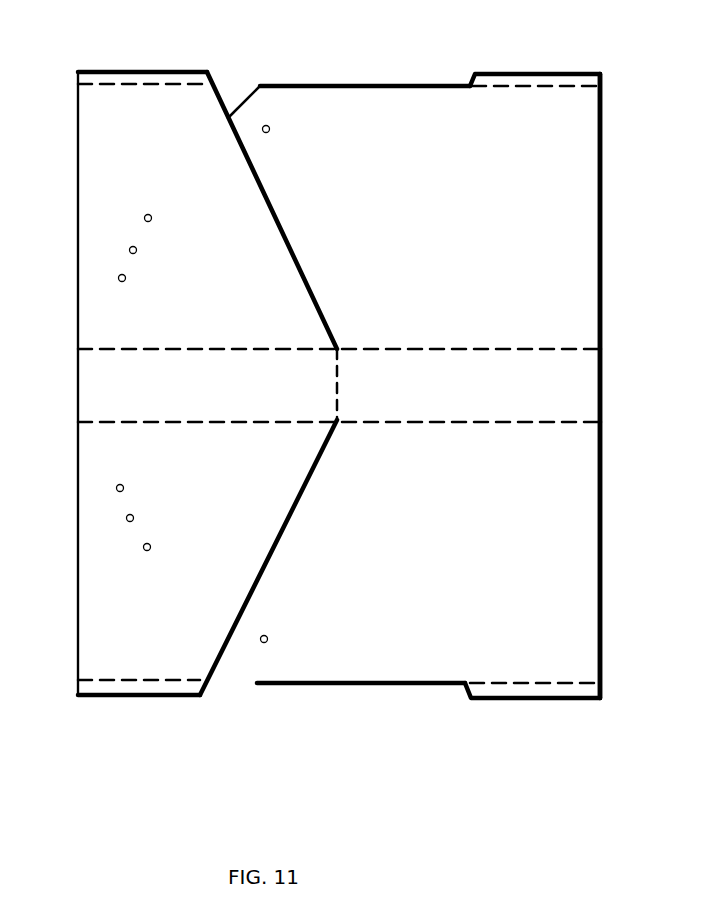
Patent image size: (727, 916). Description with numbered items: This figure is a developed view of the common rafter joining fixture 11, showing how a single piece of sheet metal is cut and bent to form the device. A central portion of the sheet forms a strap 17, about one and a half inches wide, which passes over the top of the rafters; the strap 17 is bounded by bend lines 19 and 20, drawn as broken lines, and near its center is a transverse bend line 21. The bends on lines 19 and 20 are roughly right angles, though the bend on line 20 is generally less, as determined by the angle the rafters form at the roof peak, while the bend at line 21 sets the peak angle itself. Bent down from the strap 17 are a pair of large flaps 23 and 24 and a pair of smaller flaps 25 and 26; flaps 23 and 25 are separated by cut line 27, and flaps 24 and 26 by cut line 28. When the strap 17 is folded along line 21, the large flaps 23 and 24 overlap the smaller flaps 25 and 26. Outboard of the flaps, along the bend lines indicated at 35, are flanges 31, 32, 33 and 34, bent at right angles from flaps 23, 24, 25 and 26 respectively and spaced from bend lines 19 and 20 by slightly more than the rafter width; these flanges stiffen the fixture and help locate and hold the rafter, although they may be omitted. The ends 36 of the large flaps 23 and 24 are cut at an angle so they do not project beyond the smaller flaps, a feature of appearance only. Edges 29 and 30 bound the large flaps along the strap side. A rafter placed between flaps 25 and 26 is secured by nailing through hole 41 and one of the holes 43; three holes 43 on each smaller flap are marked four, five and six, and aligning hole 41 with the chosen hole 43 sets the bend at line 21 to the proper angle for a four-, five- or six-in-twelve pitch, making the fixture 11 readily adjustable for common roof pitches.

The fixture 11 is at (603, 265).
The strap 17 is at (587, 389).
The bend line 19 is at (433, 350).
The bend line 20 is at (433, 422).
The transverse bend line 21 is at (337, 386).
The large flap 23 is at (584, 567).
The large flap 24 is at (584, 209).
The smaller flap 25 is at (88, 637).
The smaller flap 26 is at (88, 148).
The cut line 27 is at (292, 515).
The cut line 28 is at (290, 242).
The end edge 29 is at (330, 683).
The end edge 30 is at (290, 103).
The flange 31 is at (515, 698).
The flange 32 is at (498, 86).
The flange 33 is at (92, 698).
The flange 34 is at (120, 73).
The bend lines 35 is at (122, 84).
The ends of flaps 36 is at (243, 100).
The hole 41 is at (270, 129).
The holes 43 is at (152, 219).